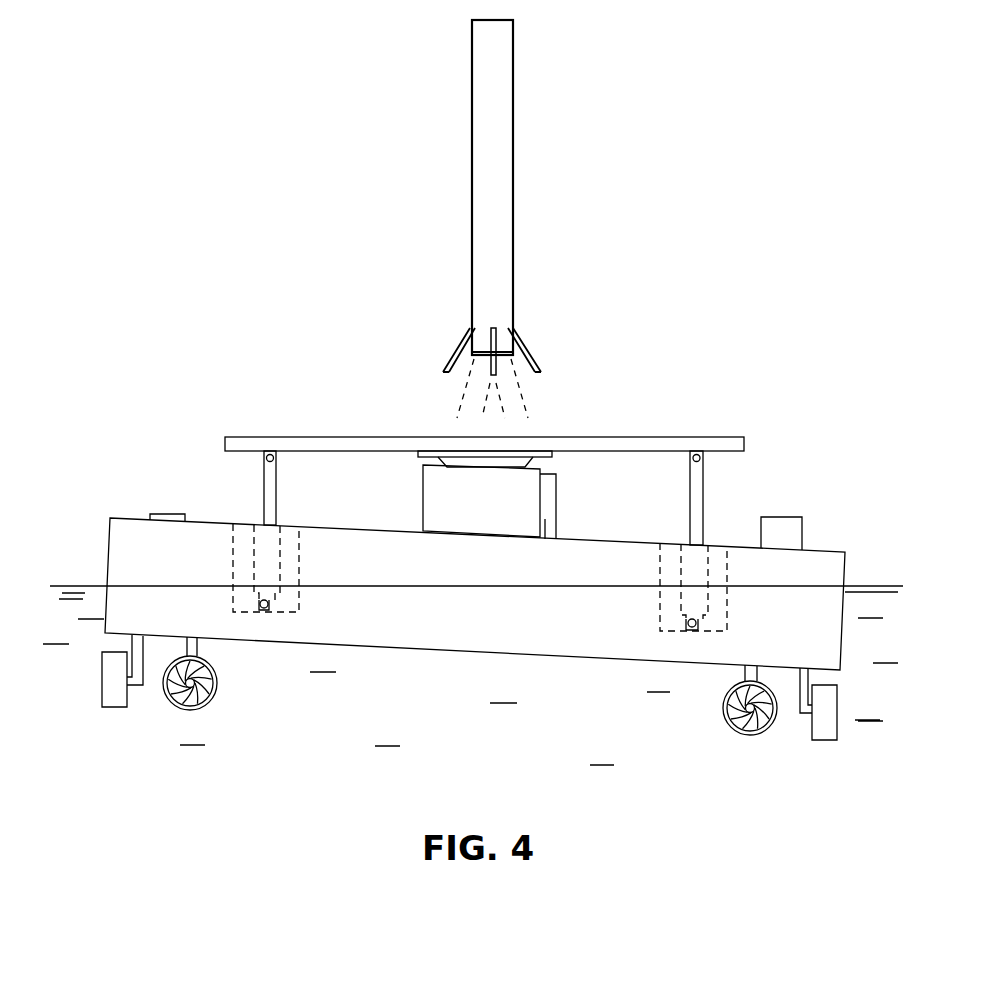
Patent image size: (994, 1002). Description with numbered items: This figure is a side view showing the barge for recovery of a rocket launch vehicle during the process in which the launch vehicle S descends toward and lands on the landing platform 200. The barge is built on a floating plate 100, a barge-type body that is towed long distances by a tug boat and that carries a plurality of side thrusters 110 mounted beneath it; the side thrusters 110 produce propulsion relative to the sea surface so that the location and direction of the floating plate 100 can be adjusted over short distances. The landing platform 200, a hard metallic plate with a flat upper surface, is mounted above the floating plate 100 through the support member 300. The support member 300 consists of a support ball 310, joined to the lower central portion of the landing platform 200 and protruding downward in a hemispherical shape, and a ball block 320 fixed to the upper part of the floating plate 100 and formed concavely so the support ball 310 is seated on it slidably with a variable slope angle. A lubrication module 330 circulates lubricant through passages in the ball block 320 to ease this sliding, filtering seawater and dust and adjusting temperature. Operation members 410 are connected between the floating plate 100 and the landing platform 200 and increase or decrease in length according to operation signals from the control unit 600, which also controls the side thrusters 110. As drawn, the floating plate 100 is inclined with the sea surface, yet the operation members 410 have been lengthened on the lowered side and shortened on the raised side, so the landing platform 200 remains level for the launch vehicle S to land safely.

The launch vehicle S is at (504, 143).
The floating plate 100 is at (820, 555).
The side thruster 110 is at (202, 703).
The landing platform 200 is at (732, 437).
The support member 300 is at (658, 357).
The support ball 310 is at (501, 461).
The ball block 320 is at (520, 506).
The lubrication module 330 is at (545, 520).
The operation member 410 is at (265, 511).
The control unit 600 is at (788, 525).